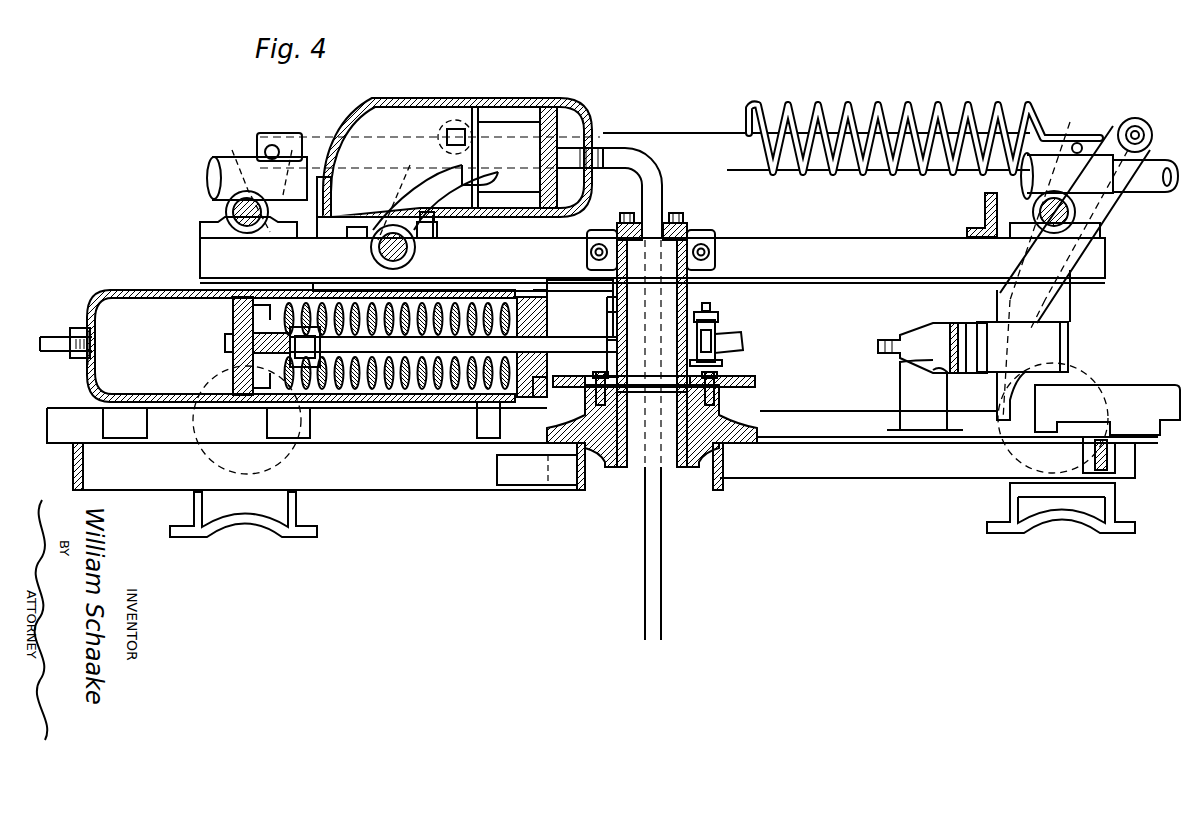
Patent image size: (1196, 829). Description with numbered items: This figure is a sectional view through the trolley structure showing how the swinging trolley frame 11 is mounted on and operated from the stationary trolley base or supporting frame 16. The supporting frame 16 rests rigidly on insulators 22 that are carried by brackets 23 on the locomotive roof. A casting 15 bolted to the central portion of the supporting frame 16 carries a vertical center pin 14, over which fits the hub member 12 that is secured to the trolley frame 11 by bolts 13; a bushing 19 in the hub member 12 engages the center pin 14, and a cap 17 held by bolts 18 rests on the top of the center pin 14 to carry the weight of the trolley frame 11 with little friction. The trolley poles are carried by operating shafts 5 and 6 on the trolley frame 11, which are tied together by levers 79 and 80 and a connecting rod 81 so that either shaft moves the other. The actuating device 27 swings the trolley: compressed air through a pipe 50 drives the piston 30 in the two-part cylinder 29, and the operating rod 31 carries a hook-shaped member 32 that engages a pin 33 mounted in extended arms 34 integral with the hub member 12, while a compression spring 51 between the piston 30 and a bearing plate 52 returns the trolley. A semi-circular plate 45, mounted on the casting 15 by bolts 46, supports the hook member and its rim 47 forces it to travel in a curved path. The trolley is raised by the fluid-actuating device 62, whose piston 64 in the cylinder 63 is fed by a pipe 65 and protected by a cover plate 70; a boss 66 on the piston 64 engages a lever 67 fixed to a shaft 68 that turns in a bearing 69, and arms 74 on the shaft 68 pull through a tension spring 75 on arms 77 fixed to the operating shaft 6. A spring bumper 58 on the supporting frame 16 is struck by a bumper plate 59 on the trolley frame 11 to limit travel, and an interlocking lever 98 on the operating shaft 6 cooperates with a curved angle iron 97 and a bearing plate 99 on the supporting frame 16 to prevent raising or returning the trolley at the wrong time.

The operating shaft 5 is at (230, 213).
The operating shaft 6 is at (1076, 222).
The trolley frame 11 is at (1103, 276).
The hub member 12 is at (714, 233).
The bolts 13 is at (590, 254).
The center pin 14 is at (666, 299).
The casting 15 is at (688, 470).
The supporting frame 16 is at (875, 478).
The cap 17 is at (690, 232).
The bolts 18 is at (627, 214).
The bushing 19 is at (617, 305).
The insulators 22 is at (207, 455).
The brackets 23 is at (300, 520).
The actuating device 27 is at (140, 368).
The cylinder 29 is at (87, 380).
The piston 30 is at (236, 312).
The operating rod 31 is at (566, 340).
The hook-shaped member 32 is at (748, 338).
The pin 33 is at (712, 307).
The extended arms 34 is at (717, 323).
The semi-circular plate 45 is at (755, 385).
The bolts 46 is at (600, 382).
The rim 47 is at (735, 382).
The pipe 50 is at (64, 338).
The compression spring 51 is at (390, 398).
The bearing plate 52 is at (547, 312).
The spring bumper 58 is at (960, 322).
The bumper plate 59 is at (1068, 333).
The fluid-actuating device 62 is at (462, 99).
The cylinder 63 is at (512, 145).
The piston 64 is at (548, 118).
The pipe 65 is at (640, 158).
The boss 66 is at (478, 128).
The lever 67 is at (424, 172).
The shaft 68 is at (415, 256).
The bearing 69 is at (440, 229).
The cover plate 70 is at (345, 120).
The arms 74 is at (436, 152).
The tension spring 75 is at (902, 110).
The arms 77 is at (1128, 120).
The lever 79 is at (232, 158).
The lever 80 is at (1052, 150).
The connecting rod 81 is at (740, 172).
The angle iron 97 is at (828, 411).
The lever 98 is at (1052, 292).
The bearing plate 99 is at (1152, 387).